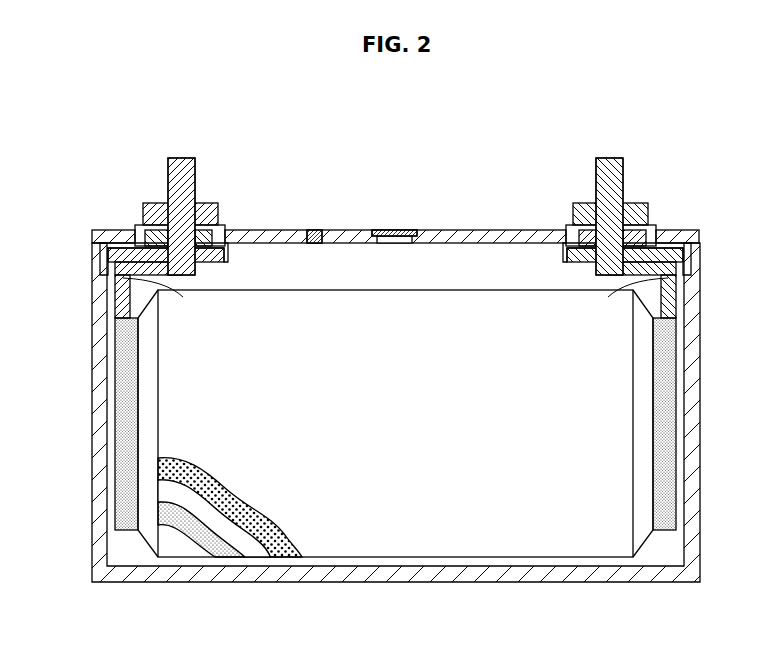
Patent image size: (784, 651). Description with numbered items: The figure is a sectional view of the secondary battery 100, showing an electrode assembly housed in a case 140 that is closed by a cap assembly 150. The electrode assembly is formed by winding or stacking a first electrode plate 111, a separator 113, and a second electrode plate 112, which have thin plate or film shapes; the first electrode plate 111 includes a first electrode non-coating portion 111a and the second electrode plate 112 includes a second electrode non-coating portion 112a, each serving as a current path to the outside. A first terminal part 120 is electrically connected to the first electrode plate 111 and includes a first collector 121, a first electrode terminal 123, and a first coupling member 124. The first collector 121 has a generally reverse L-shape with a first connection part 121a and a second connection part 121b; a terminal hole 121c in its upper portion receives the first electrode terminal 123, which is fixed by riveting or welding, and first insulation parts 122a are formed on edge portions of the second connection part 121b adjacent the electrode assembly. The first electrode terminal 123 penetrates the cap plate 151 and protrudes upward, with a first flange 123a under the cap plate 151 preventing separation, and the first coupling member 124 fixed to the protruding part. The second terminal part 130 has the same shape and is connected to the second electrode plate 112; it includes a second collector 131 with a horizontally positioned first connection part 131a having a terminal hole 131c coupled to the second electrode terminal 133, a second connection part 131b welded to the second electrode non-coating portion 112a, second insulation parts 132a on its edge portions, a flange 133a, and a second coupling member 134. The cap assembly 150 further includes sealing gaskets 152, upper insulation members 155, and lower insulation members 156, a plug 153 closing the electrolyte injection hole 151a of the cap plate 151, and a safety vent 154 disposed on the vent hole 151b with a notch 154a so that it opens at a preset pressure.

The secondary battery 100 is at (59, 91).
The first electrode plate 111 is at (232, 560).
The first electrode non-coating portion 111a is at (138, 560).
The second electrode plate 112 is at (292, 560).
The second electrode non-coating portion 112a is at (643, 545).
The separator 113 is at (178, 560).
The first terminal part 120 is at (199, 185).
The first collector 121 is at (123, 372).
The first connection part 121a is at (100, 282).
The second connection part 121b is at (122, 440).
The terminal hole 121c is at (115, 305).
The first insulation parts 122a is at (138, 482).
The first electrode terminal 123 is at (185, 156).
The first flange 123a is at (95, 240).
The first coupling member 124 is at (158, 202).
The second terminal part 130 is at (629, 184).
The second collector 131 is at (670, 388).
The first connection part 131a is at (690, 280).
The second connection part 131b is at (670, 438).
The terminal hole 131c is at (655, 305).
The second insulation parts 132a is at (660, 482).
The second electrode terminal 133 is at (610, 156).
The second terminal pin flange 133a is at (698, 253).
The second coupling member 134 is at (628, 202).
The case 140 is at (700, 525).
The cap assembly 150 is at (395, 219).
The cap plate 151 is at (470, 229).
The electrolyte injection hole 151a is at (312, 245).
The vent hole 151b is at (400, 245).
The sealing gaskets 152 is at (125, 246).
The plug 153 is at (313, 229).
The safety vent 154 is at (399, 213).
The notch 154a is at (420, 200).
The upper insulation members 155 is at (142, 228).
The lower insulation members 156 is at (100, 256).